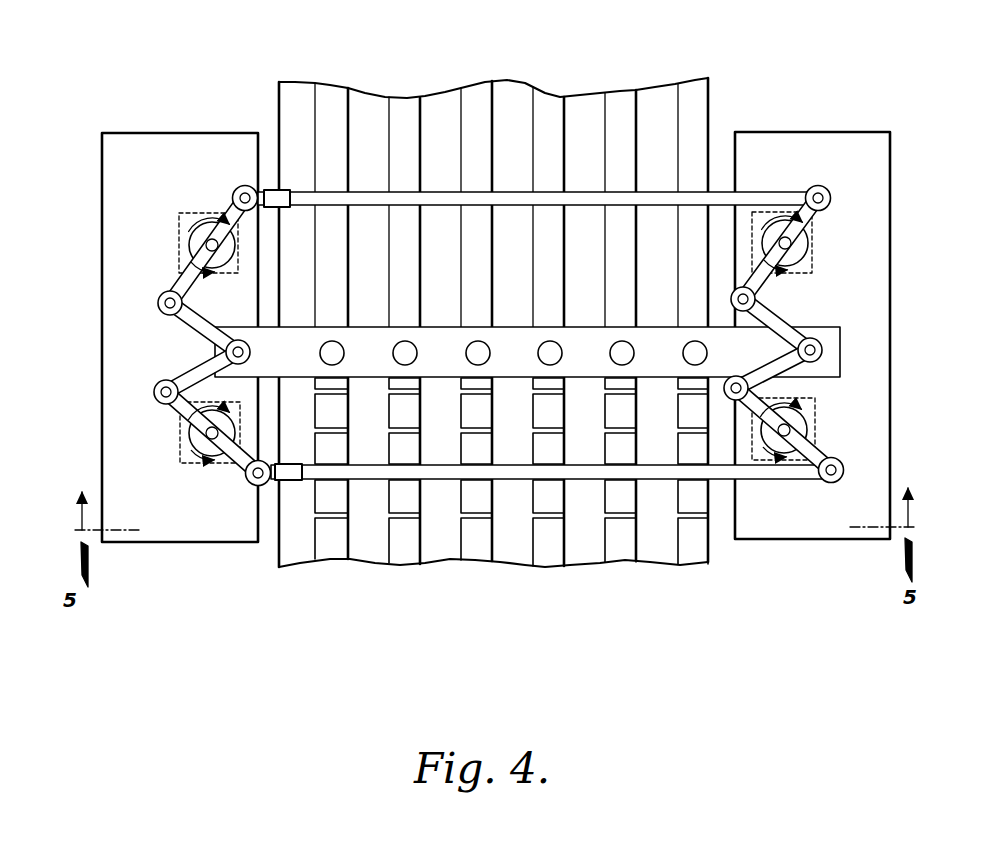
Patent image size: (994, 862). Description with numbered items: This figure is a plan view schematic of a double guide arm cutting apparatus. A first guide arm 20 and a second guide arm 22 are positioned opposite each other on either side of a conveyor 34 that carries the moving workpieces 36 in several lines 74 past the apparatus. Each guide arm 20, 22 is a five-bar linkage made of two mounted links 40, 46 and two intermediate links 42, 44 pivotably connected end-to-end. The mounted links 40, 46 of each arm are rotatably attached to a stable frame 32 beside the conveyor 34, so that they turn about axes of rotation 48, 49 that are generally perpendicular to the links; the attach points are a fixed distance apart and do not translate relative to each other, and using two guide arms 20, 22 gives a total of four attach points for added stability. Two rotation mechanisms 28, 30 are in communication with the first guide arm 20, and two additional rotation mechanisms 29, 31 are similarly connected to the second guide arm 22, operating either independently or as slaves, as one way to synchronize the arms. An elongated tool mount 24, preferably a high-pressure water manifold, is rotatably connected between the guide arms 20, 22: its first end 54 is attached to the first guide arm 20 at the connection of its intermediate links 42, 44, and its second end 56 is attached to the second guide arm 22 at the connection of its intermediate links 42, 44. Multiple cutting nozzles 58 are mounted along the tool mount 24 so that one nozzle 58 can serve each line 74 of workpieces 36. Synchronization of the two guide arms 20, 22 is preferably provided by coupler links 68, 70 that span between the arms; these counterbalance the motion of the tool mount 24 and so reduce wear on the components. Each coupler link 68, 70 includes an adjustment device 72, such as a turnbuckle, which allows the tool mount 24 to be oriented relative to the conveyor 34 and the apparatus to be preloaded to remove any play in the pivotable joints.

The guide arm 20 is at (185, 242).
The second guide arm 22 is at (778, 307).
The tool mount 24 is at (288, 364).
The rotation mechanism 28 is at (200, 213).
The rotation mechanism 29 is at (812, 243).
The rotation mechanism 30 is at (180, 462).
The rotation mechanism 31 is at (818, 438).
The frame 32 is at (189, 140).
The conveyor 34 is at (493, 303).
The moving workpiece 36 is at (344, 149).
The mounted link 40 is at (180, 292).
The intermediate link 42 is at (195, 322).
The intermediate link 44 is at (190, 378).
The mounted link 46 is at (180, 410).
The axis of rotation 48 is at (186, 231).
The axis of rotation 49 is at (199, 460).
The first end 54 is at (239, 331).
The second end 56 is at (839, 336).
The cutting nozzle 58 is at (344, 353).
The coupler link 68 is at (715, 197).
The coupler link 70 is at (373, 480).
The adjustment device 72 is at (267, 190).
The line 74 is at (333, 73).